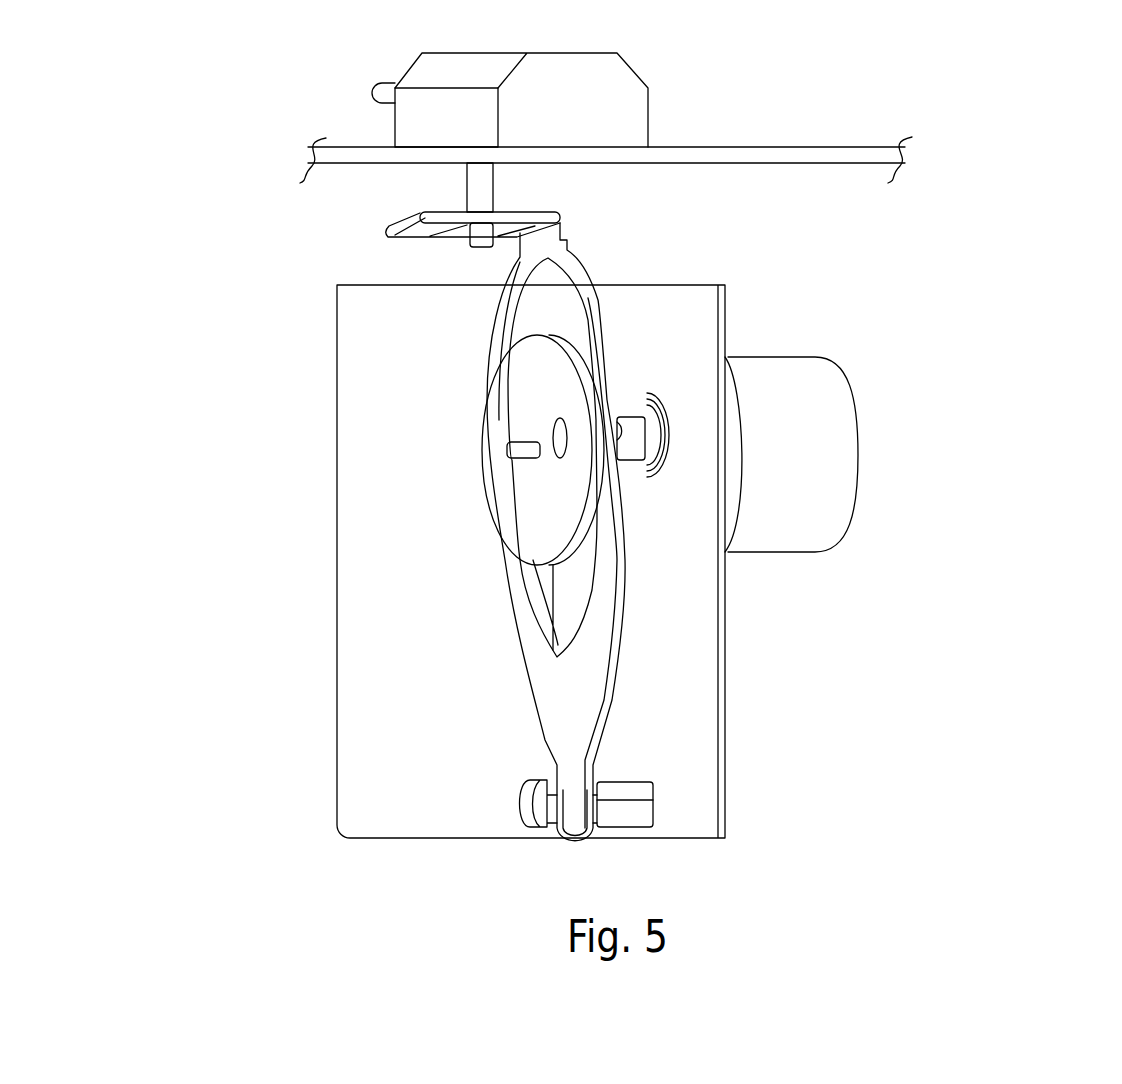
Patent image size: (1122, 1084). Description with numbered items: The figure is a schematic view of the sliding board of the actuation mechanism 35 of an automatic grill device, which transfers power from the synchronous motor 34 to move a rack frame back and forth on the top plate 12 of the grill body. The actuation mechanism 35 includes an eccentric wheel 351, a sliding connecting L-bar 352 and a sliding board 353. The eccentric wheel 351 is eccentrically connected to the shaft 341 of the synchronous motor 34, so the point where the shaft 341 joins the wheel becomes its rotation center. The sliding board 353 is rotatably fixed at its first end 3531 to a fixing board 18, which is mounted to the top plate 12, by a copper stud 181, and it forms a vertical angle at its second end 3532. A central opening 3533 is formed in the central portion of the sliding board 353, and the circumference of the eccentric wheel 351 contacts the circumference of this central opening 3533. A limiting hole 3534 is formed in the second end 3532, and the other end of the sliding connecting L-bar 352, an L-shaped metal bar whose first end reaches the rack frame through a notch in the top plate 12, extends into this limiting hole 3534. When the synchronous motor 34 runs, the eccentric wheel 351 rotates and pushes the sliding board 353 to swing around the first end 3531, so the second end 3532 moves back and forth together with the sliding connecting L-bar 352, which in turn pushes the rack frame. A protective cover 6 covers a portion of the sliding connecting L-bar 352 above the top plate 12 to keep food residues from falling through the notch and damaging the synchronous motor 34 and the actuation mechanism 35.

The protective cover 6 is at (583, 103).
The top plate 12 is at (815, 152).
The fixing board 18 is at (660, 653).
The copper stud 181 is at (527, 803).
The synchronous motor 34 is at (800, 437).
The shaft 341 is at (630, 447).
The actuation mechanism 35 is at (190, 547).
The eccentric wheel 351 is at (515, 488).
The sliding connecting L-bar 352 is at (470, 238).
The sliding board 353 is at (559, 532).
The first end 3531 is at (580, 838).
The second end 3532 is at (535, 216).
The central opening 3533 is at (583, 300).
The limiting hole 3534 is at (430, 222).